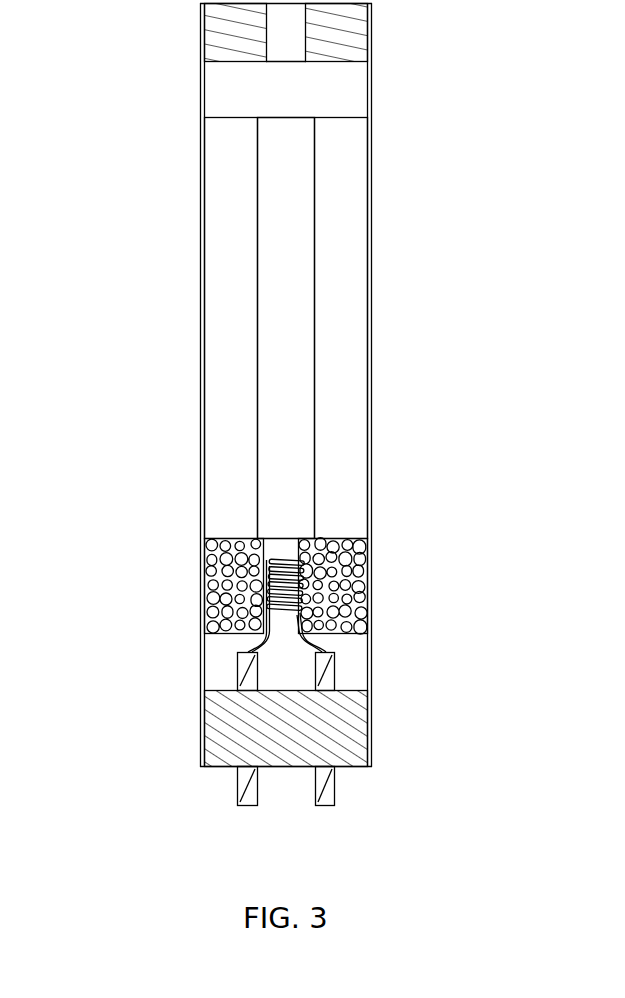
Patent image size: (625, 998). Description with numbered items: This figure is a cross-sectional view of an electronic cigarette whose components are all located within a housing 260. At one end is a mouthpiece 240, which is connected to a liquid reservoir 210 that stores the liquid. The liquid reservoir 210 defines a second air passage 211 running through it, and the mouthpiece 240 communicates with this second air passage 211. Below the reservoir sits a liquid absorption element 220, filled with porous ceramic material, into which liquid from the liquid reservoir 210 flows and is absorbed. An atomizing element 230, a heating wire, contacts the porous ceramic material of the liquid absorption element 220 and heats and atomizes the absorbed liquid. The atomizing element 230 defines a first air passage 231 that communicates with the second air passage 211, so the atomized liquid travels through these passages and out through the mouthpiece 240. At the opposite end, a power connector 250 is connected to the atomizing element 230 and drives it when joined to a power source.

The housing 260 is at (200, 291).
The mouthpiece 240 is at (357, 32).
The liquid reservoir 210 is at (345, 210).
The second air passage 211 is at (292, 326).
The liquid absorption element 220 is at (228, 593).
The atomizing element 230 is at (282, 565).
The first air passage 231 is at (283, 548).
The power connector 250 is at (300, 727).